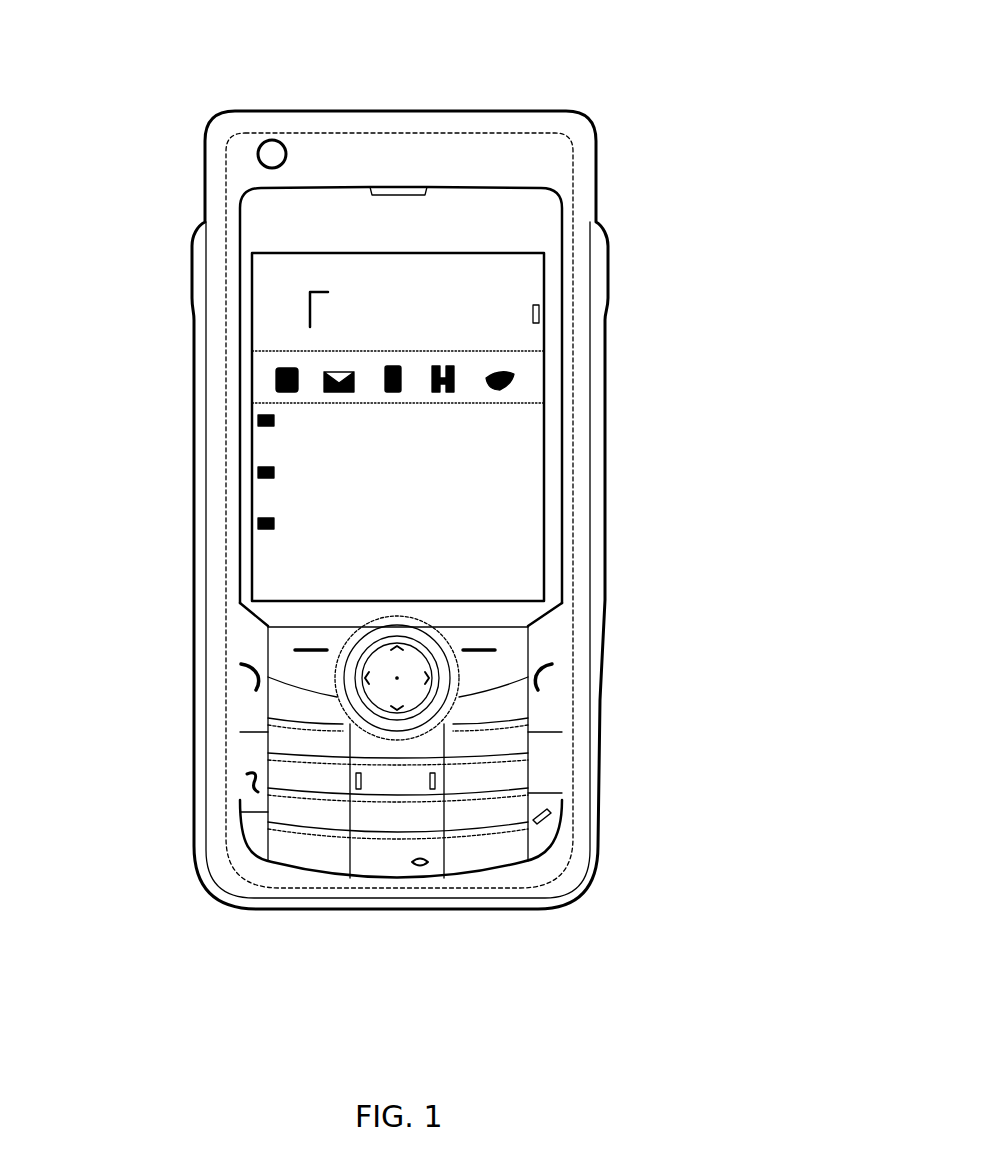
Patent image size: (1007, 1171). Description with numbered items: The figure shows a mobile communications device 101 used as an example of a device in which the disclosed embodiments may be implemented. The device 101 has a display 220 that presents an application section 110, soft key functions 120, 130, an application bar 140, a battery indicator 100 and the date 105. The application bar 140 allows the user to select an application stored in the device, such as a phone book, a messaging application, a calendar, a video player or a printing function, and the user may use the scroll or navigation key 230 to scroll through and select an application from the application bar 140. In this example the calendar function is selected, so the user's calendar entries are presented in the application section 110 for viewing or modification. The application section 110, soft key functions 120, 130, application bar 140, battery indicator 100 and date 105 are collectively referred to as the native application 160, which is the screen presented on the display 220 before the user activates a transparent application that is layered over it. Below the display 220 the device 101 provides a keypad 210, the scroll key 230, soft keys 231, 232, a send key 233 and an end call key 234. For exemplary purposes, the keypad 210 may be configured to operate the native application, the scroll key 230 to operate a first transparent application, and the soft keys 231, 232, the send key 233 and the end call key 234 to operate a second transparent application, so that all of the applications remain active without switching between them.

The mobile communications device 101 is at (135, 268).
The battery indicator 100 is at (535, 305).
The date 105 is at (424, 300).
The application section 110 is at (510, 513).
The soft key function 120 is at (545, 582).
The soft key function 130 is at (253, 583).
The application bar 140 is at (270, 375).
The native application 160 is at (518, 452).
The keypad 210 is at (490, 855).
The display 220 is at (510, 272).
The scroll or navigation key 230 is at (387, 690).
The soft key 231 is at (282, 662).
The soft key 232 is at (503, 656).
The send key 233 is at (247, 688).
The end call key 234 is at (545, 688).